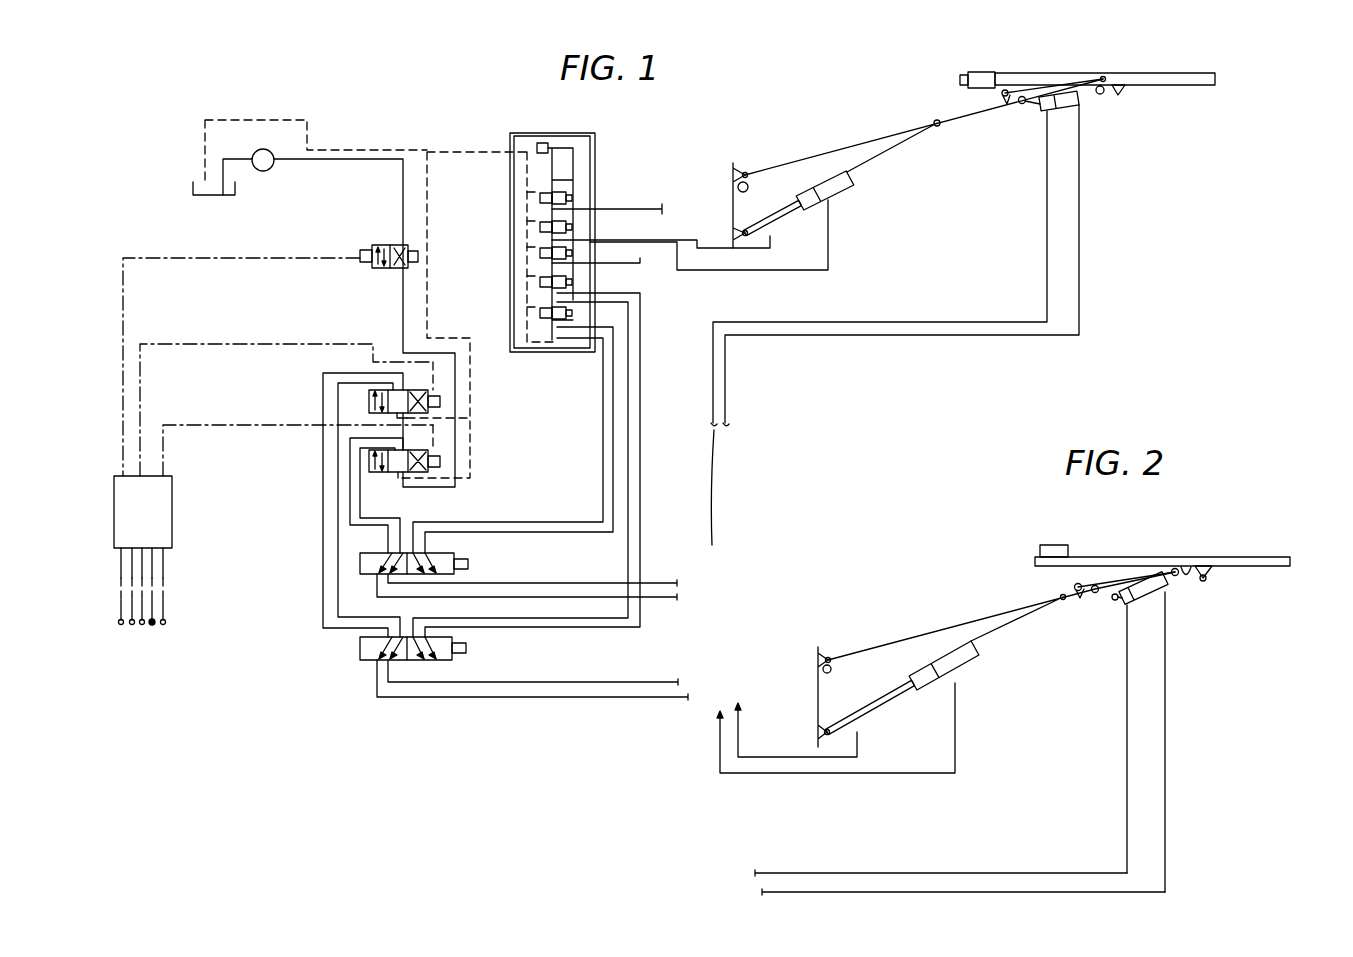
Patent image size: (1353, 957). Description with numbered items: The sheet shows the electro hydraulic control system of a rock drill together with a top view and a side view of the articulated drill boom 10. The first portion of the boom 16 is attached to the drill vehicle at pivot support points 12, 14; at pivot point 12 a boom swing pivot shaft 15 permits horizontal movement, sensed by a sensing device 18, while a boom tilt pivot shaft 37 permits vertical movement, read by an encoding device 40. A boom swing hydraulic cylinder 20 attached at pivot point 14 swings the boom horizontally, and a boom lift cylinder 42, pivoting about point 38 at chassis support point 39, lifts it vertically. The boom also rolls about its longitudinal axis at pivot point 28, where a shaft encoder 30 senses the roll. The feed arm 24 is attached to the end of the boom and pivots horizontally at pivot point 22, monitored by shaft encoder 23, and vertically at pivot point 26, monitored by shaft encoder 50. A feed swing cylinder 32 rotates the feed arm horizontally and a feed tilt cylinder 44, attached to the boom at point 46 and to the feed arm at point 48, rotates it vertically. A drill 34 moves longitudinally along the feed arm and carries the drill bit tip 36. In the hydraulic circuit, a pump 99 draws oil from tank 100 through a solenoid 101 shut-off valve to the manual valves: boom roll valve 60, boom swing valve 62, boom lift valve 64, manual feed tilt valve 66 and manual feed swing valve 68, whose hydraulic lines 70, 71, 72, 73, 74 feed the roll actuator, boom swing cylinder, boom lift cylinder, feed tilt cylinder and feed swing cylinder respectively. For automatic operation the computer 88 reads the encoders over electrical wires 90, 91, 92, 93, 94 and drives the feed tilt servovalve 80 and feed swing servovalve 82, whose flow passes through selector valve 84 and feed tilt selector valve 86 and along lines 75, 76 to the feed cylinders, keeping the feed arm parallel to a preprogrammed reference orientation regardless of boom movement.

In FIG. 1, the drill boom 10 is at (946, 82).
In FIG. 2, the drill boom 10 is at (1188, 542).
In FIG. 1, the pivot support point 12 is at (740, 166).
In FIG. 2, the pivot support point 12 is at (825, 652).
In FIG. 1, the pivot support point 14 is at (745, 230).
In FIG. 1, the boom swing pivot shaft 15 is at (748, 172).
In FIG. 1, the first portion of the boom 16 is at (905, 132).
In FIG. 2, the first portion of the boom 16 is at (985, 614).
In FIG. 1, the sensing device 18 is at (748, 187).
In FIG. 1, the boom swing hydraulic cylinder 20 is at (832, 192).
In FIG. 1, the pivot point 22 is at (1104, 76).
In FIG. 1, the shaft encoder 23 is at (1114, 97).
In FIG. 1, the feed arm 24 is at (1145, 74).
In FIG. 2, the feed arm 24 is at (1118, 558).
In FIG. 2, the pivot point 26 is at (1175, 568).
In FIG. 1, the pivot point 28 is at (1022, 104).
In FIG. 2, the pivot point 28 is at (1094, 593).
In FIG. 1, the shaft encoder 30 is at (1001, 95).
In FIG. 2, the shaft encoder 30 is at (1074, 585).
In FIG. 1, the feed swing cylinder 32 is at (1072, 110).
In FIG. 1, the drill 34 is at (978, 72).
In FIG. 2, the drill 34 is at (1046, 545).
In FIG. 1, the drill bit tip 36 is at (1215, 80).
In FIG. 2, the drill bit tip 36 is at (1290, 561).
In FIG. 2, the boom tilt pivot shaft 37 is at (833, 657).
In FIG. 2, the pivot point 38 is at (830, 737).
In FIG. 2, the pivot support point 39 is at (826, 738).
In FIG. 2, the encoding device 40 is at (831, 670).
In FIG. 2, the boom lift cylinder 42 is at (965, 660).
In FIG. 2, the feed tilt cylinder 44 is at (1160, 588).
In FIG. 2, the pivot point 46 is at (1115, 600).
In FIG. 2, the pivot point 48 is at (1206, 580).
In FIG. 2, the shaft encoder 50 is at (1187, 568).
In FIG. 1, the boom roll hydraulic valve 60 is at (540, 199).
In FIG. 1, the boom swing valve 62 is at (540, 228).
In FIG. 1, the boom lift valve 64 is at (540, 256).
In FIG. 1, the manual feed tilt hydraulic valve 66 is at (540, 285).
In FIG. 1, the manual feed swing hydraulic valve 68 is at (540, 314).
In FIG. 1, the hydraulic lines 70 is at (604, 209).
In FIG. 1, the hydraulic lines 71 is at (642, 238).
In FIG. 1, the hydraulic lines 72 is at (640, 265).
In FIG. 2, the hydraulic lines 72 is at (740, 730).
In FIG. 1, the hydraulic lines 73 is at (640, 305).
In FIG. 1, the hydraulic lines 74 is at (607, 363).
In FIG. 1, the hydraulic lines 75 is at (680, 583).
In FIG. 1, the hydraulic lines 76 is at (680, 680).
In FIG. 2, the hydraulic lines 76 is at (755, 873).
In FIG. 1, the feed tilt servovalve 80 is at (440, 402).
In FIG. 1, the feed swing servovalve 82 is at (440, 460).
In FIG. 1, the selector valve 84 is at (468, 564).
In FIG. 1, the feed tilt selector valve 86 is at (466, 651).
In FIG. 1, the computer 88 is at (143, 512).
In FIG. 1, the electrical wire 90 is at (119, 625).
In FIG. 1, the electrical wire 91 is at (131, 625).
In FIG. 1, the electrical wire 92 is at (142, 625).
In FIG. 1, the electrical wire 93 is at (154, 625).
In FIG. 1, the electrical wire 94 is at (166, 622).
In FIG. 1, the pump 99 is at (282, 142).
In FIG. 1, the tank 100 is at (235, 195).
In FIG. 1, the solenoid 101 is at (378, 270).